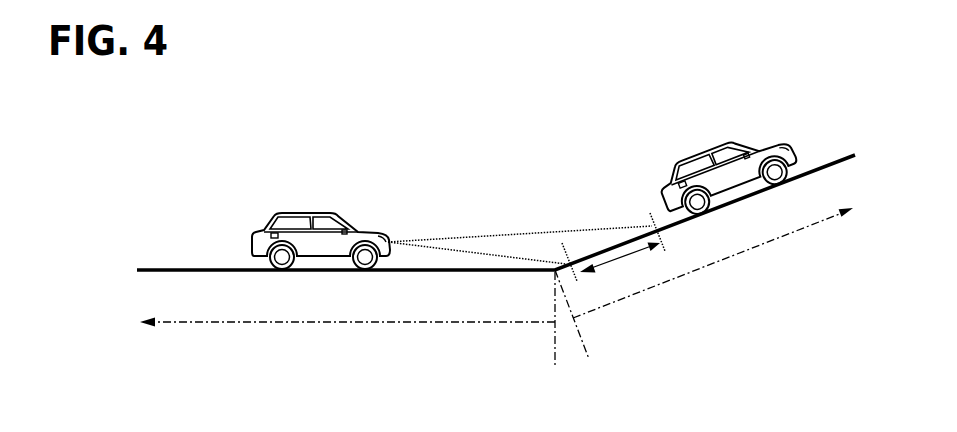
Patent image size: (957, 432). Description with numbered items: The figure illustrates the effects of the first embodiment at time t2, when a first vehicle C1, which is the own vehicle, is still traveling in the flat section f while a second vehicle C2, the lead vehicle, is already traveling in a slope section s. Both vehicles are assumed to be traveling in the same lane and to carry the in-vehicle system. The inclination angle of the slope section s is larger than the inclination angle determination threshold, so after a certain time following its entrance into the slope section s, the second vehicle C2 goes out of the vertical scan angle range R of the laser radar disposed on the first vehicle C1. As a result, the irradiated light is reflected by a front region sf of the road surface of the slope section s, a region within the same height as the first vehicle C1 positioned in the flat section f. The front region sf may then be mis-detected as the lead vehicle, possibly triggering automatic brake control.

The time t2 is at (142, 128).
The first vehicle C1 is at (345, 188).
The second vehicle C2 is at (762, 127).
The vertical scan angle range R is at (448, 241).
The flat section f is at (347, 311).
The slope section s is at (713, 263).
The front region sf is at (620, 265).